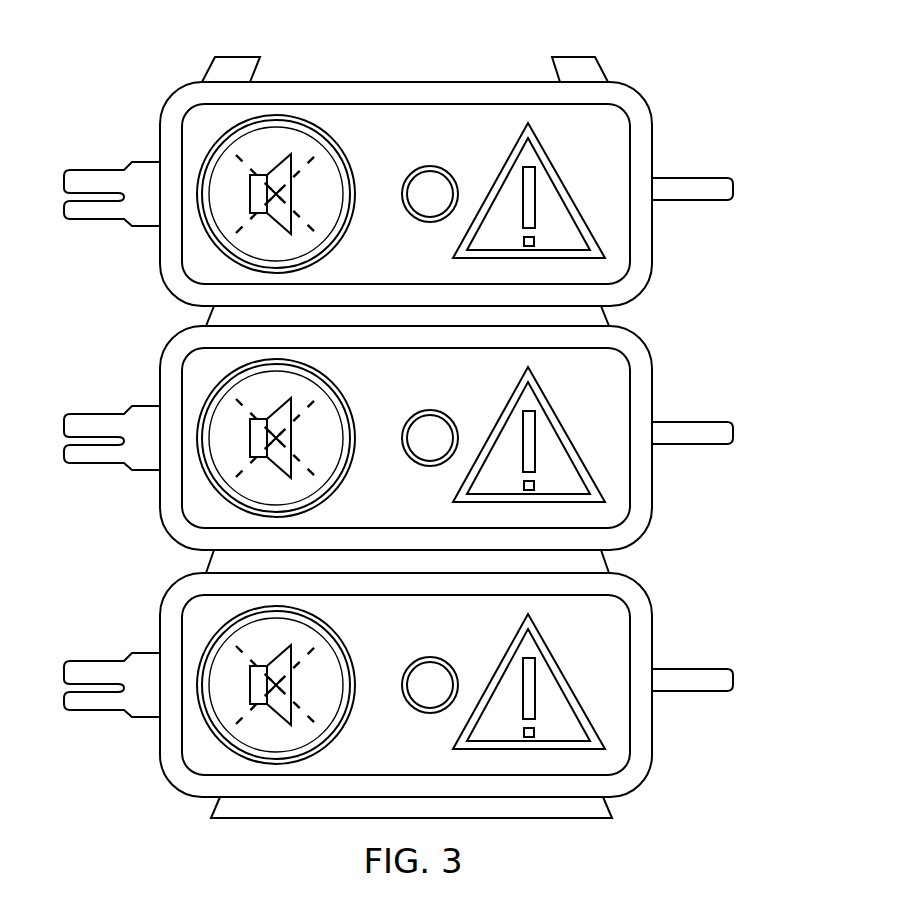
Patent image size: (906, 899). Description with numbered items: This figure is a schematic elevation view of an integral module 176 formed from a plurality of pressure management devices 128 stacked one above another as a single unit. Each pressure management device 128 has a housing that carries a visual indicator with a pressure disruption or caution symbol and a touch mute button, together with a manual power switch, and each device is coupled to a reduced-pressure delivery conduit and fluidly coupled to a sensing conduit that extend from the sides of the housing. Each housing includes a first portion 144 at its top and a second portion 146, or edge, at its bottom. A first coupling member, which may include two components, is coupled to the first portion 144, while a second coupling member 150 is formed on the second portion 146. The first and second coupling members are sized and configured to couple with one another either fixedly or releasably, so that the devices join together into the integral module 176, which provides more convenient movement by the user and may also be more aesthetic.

The pressure management device 128 is at (653, 258).
The first portion 144 is at (402, 81).
The second portion 146 is at (375, 832).
The second coupling member 150 is at (419, 836).
The integral module 176 is at (399, 704).